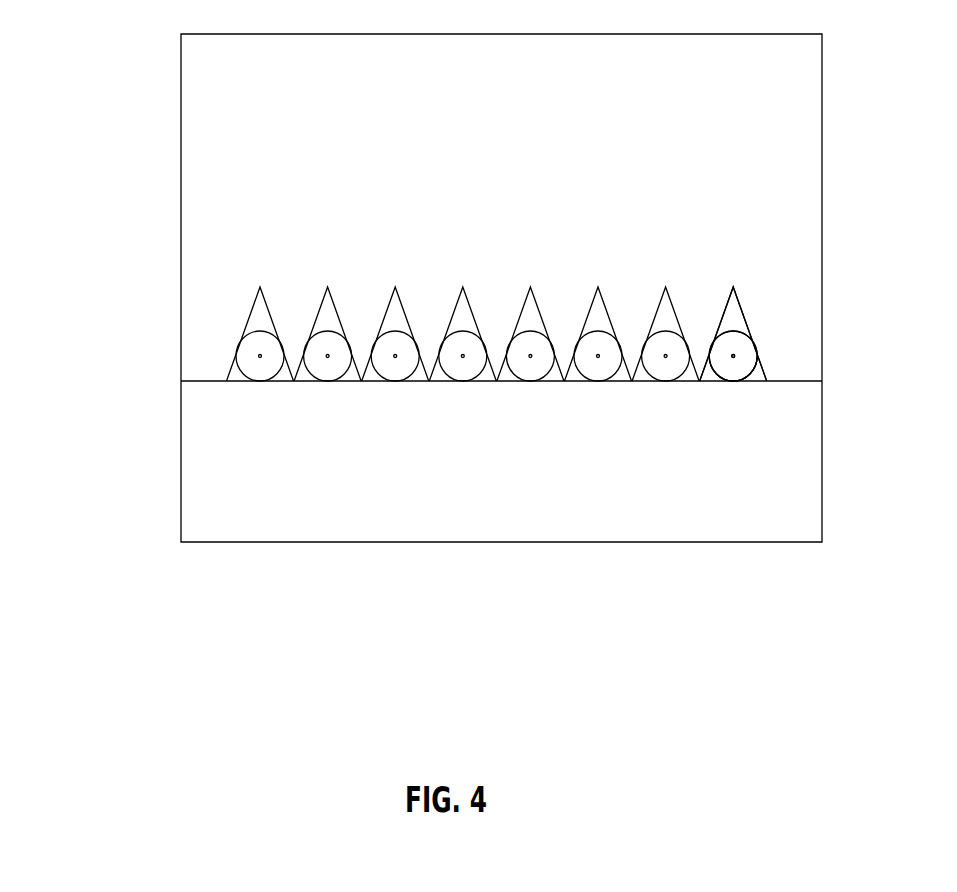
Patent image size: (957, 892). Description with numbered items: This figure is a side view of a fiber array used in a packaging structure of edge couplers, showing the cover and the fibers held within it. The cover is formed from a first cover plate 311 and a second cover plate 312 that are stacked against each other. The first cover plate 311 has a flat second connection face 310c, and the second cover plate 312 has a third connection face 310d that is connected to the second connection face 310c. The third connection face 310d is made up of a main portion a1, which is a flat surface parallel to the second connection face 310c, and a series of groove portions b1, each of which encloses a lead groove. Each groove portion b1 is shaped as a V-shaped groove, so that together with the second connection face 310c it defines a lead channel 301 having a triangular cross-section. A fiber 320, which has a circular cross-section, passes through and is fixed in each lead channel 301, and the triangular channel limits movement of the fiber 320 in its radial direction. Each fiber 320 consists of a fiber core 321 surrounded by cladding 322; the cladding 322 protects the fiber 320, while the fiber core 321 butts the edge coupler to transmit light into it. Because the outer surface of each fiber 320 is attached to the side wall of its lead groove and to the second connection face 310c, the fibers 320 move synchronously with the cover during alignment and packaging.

The second cover plate 312 is at (218, 235).
The first cover plate 311 is at (218, 502).
The second connection face 310c is at (246, 383).
The third connection face 310d is at (412, 334).
The groove portion b1 is at (250, 321).
The main portion a1 is at (211, 381).
The lead channel 301 is at (739, 312).
The fiber 320 is at (831, 391).
The fiber core 321 is at (737, 356).
The cladding 322 is at (740, 372).